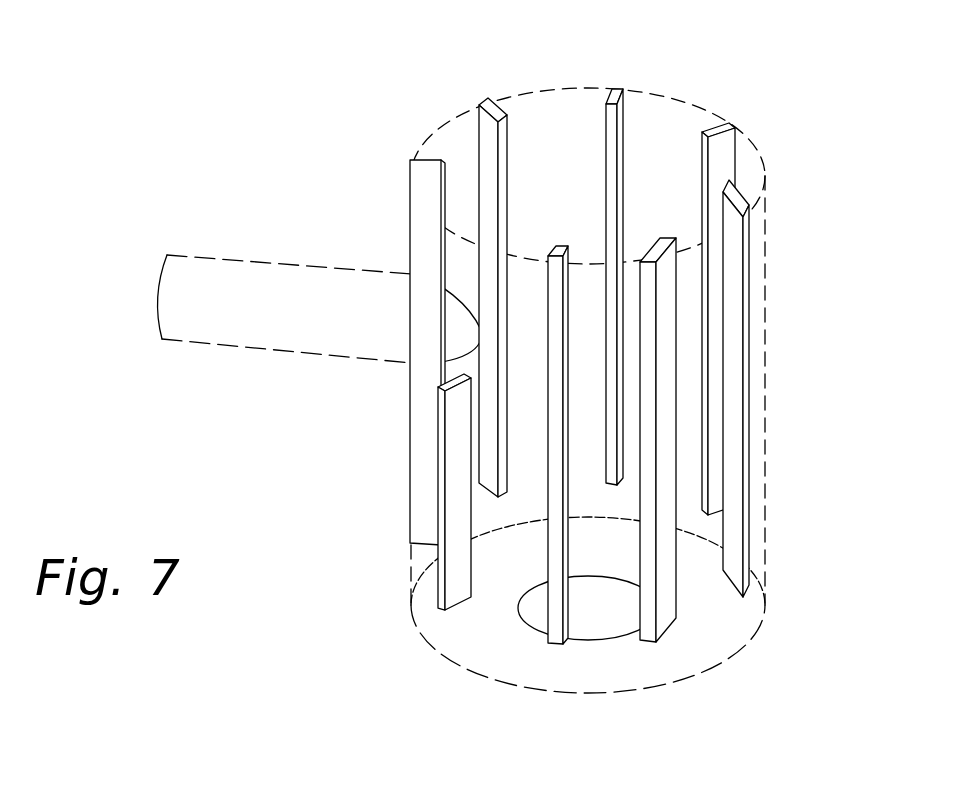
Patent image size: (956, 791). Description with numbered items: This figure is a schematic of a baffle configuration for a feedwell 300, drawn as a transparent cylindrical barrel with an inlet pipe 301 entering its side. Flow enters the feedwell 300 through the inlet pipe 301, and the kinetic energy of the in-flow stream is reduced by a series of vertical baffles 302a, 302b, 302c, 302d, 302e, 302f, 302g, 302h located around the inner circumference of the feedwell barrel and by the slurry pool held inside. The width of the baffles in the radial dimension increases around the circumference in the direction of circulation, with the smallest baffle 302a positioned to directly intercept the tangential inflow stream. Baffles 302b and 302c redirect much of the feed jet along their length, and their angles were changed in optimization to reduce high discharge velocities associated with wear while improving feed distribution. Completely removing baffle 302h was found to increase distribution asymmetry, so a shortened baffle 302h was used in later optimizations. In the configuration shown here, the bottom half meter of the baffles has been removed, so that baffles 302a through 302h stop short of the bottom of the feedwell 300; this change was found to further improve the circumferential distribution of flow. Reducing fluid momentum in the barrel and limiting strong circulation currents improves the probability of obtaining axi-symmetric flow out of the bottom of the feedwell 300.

The feedwell 300 is at (765, 332).
The inlet pipe 301 is at (281, 263).
The baffle #1 302a is at (552, 250).
The baffle #2 302b is at (657, 248).
The baffle #3 302c is at (733, 258).
The baffle #4 302d is at (726, 151).
The baffle #5 302e is at (614, 88).
The baffle #6 302f is at (490, 103).
The baffle #7 302g is at (423, 430).
The baffle #8 302h is at (455, 512).